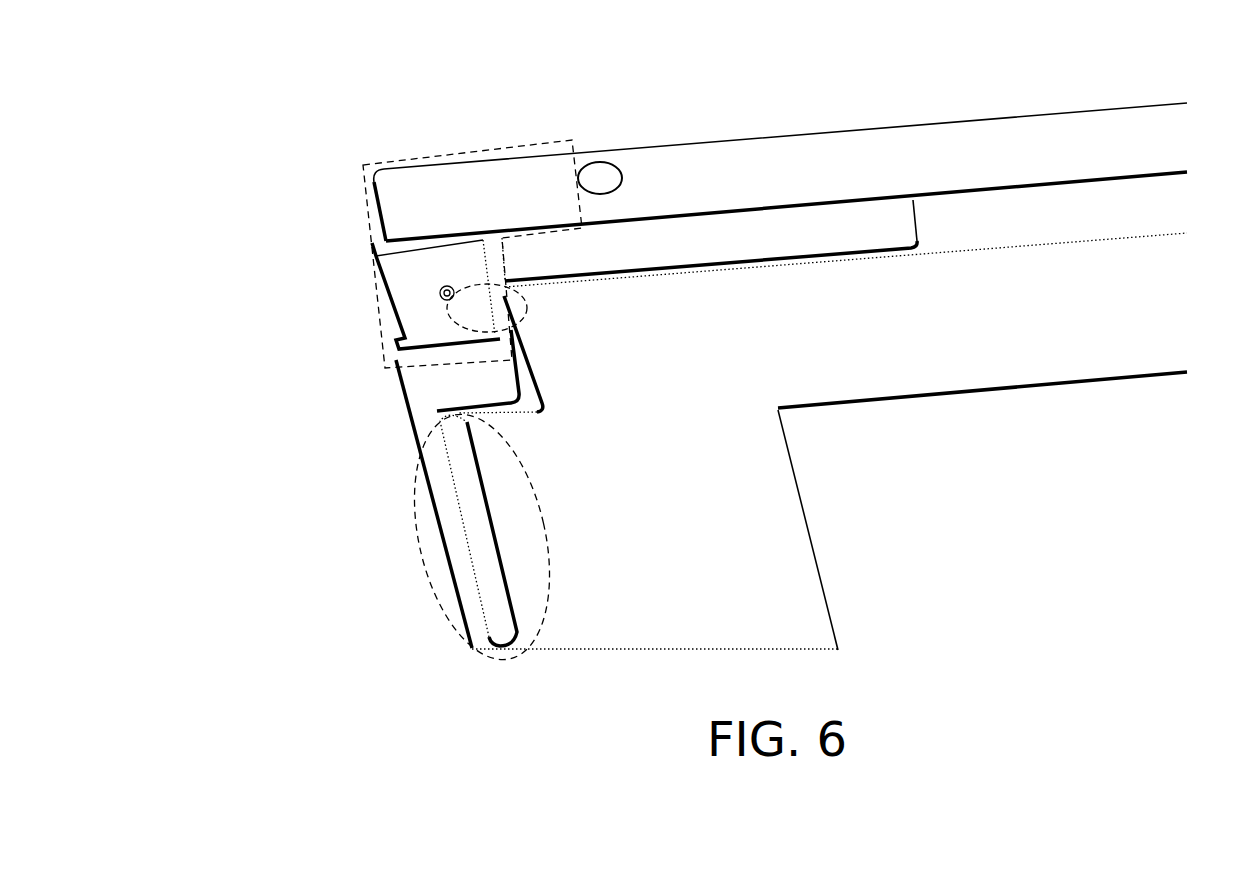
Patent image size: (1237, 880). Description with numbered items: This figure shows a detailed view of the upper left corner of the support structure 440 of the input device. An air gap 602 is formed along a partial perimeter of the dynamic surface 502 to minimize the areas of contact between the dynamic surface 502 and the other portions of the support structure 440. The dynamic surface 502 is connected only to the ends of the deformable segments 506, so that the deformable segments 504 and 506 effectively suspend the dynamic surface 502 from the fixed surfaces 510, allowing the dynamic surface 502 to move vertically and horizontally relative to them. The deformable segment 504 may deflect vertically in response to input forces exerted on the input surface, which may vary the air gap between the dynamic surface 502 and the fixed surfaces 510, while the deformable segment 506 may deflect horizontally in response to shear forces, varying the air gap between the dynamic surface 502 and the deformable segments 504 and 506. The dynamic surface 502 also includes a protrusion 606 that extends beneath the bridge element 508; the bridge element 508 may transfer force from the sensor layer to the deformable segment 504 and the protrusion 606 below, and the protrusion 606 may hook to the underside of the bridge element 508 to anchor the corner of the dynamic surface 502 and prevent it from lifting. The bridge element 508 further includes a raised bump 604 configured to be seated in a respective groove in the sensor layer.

The support structure 440 is at (328, 78).
The dynamic surface 502 is at (768, 493).
The deformable segment 504 is at (360, 165).
The deformable segment 506 is at (418, 523).
The bridge element 508 is at (412, 266).
The fixed surface 510 is at (737, 162).
The air gap 602 is at (933, 243).
The raised bump 604 is at (447, 272).
The protrusion 606 is at (527, 309).